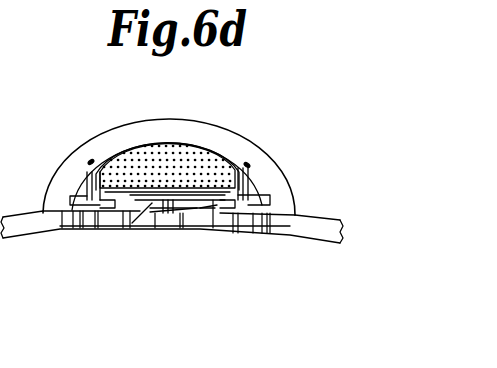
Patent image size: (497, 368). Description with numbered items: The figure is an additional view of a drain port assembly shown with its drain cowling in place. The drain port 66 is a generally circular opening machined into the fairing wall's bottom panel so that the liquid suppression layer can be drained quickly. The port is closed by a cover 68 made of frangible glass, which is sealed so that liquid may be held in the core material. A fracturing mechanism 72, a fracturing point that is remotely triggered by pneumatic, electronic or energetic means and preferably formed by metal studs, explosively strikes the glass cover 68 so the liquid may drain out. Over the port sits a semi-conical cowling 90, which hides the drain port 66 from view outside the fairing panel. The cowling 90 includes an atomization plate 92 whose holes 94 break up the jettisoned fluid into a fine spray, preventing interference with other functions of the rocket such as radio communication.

The drain port 66 is at (157, 246).
The cover 68 is at (183, 228).
The fracturing mechanism 72 is at (143, 212).
The semi-conical cowling 90 is at (240, 152).
The atomization plate 92 is at (202, 152).
The holes 94 is at (152, 156).